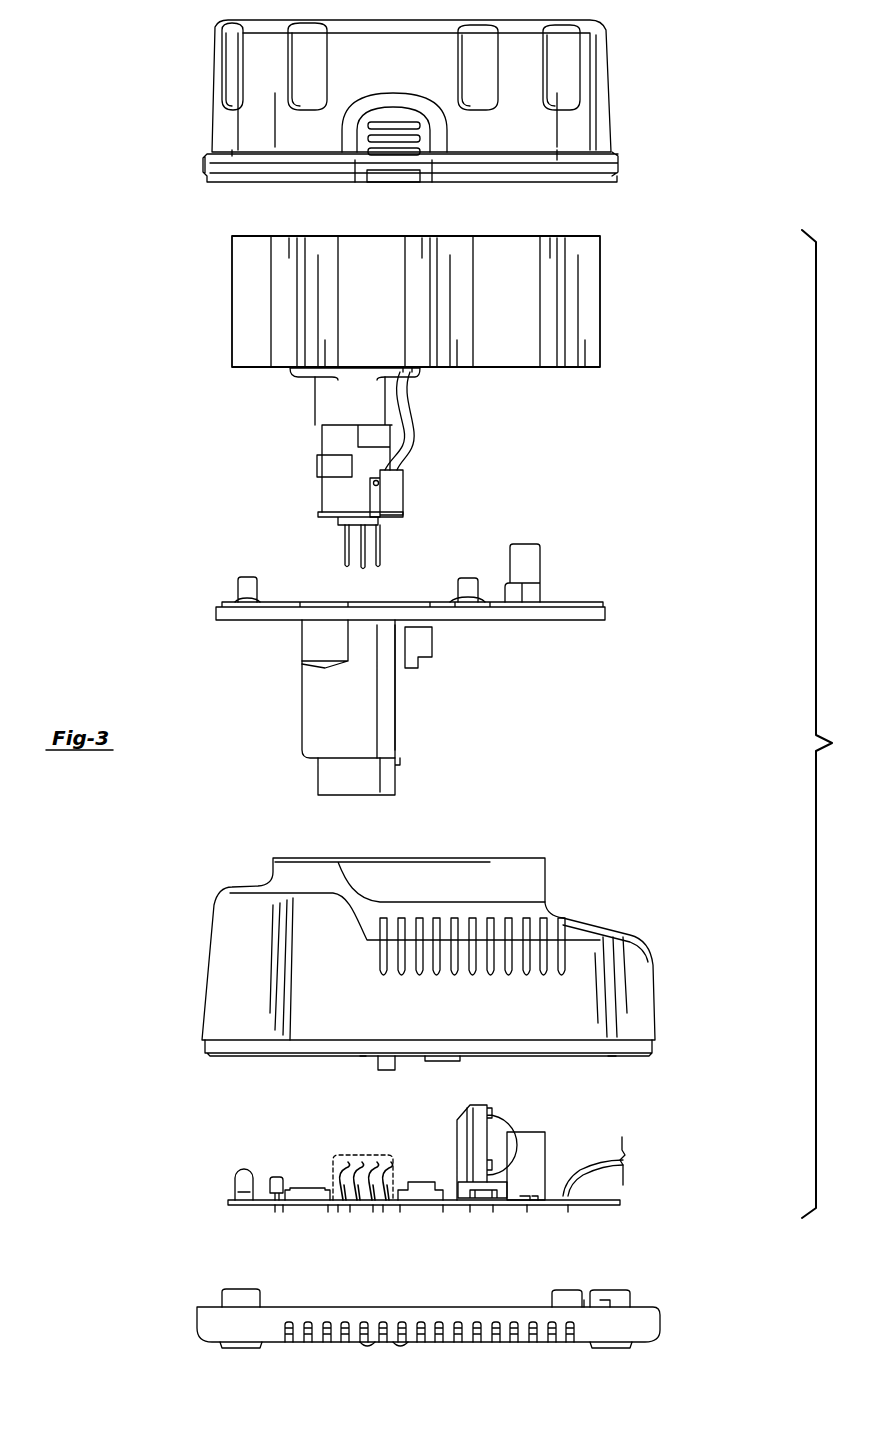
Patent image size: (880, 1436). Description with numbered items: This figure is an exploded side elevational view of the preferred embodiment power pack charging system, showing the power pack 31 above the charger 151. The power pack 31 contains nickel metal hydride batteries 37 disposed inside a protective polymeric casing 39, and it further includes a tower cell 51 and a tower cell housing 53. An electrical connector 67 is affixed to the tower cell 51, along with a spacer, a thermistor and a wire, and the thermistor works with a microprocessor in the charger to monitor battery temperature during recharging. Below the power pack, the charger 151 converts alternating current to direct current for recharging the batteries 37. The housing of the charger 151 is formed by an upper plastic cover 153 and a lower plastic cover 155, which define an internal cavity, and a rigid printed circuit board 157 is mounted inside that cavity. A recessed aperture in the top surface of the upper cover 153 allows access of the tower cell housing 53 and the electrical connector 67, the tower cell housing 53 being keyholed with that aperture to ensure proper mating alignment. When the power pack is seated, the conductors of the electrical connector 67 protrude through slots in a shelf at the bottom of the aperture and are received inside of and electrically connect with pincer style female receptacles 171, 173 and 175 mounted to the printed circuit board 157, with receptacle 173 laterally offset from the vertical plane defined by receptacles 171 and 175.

The power pack 31 is at (710, 771).
The protective polymeric casing 39 is at (228, 122).
The nickel metal hydride batteries 37 is at (247, 305).
The tower cell 51 is at (333, 442).
The electrical connector 67 is at (400, 520).
The tower cell housing 53 is at (387, 713).
The charger 151 is at (716, 1347).
The upper plastic cover 153 is at (232, 973).
The printed circuit board 157 is at (228, 1201).
The pincer style female receptacle 171 is at (333, 1180).
The pincer style female receptacle 173 is at (363, 1167).
The pincer style female receptacle 175 is at (393, 1180).
The lower plastic cover 155 is at (210, 1322).